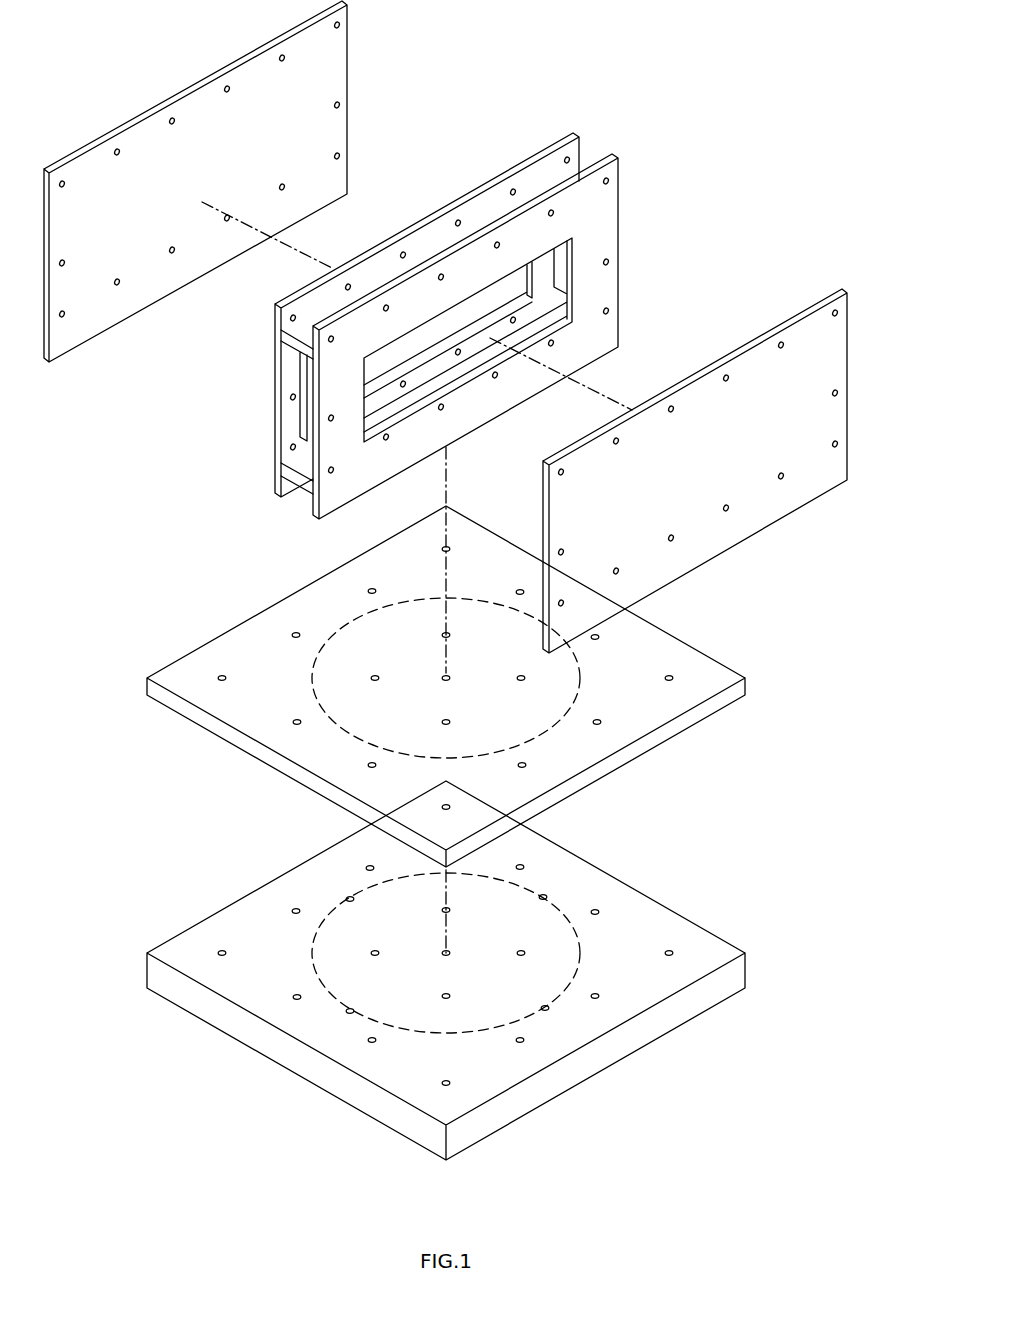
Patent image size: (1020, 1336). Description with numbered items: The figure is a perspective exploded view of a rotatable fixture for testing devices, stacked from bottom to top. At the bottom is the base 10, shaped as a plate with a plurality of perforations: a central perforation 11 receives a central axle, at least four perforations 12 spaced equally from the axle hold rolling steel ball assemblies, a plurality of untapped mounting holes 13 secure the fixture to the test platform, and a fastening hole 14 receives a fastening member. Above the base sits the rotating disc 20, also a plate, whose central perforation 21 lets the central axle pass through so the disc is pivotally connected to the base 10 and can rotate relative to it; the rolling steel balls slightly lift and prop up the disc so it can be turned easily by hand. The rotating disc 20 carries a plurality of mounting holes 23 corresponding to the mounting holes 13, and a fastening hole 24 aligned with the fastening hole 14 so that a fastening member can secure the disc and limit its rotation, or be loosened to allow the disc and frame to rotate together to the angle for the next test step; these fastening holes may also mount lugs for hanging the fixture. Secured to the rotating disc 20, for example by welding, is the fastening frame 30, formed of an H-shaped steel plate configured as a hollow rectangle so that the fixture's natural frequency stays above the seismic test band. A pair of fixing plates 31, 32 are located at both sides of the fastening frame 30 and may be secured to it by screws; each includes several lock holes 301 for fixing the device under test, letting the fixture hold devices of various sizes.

The base 10 is at (747, 974).
The perforation 11 is at (470, 953).
The perforations 12 is at (567, 1024).
The mounting holes 13 is at (218, 953).
The fastening hole 14 is at (367, 868).
The rotating disc 20 is at (748, 680).
The perforation 21 is at (470, 678).
The mounting holes 23 is at (442, 549).
The fastening hole 24 is at (368, 591).
The fastening frame 30 is at (607, 192).
The lock holes 301 is at (838, 311).
The fixing plate 31 is at (843, 358).
The fixing plate 32 is at (349, 62).